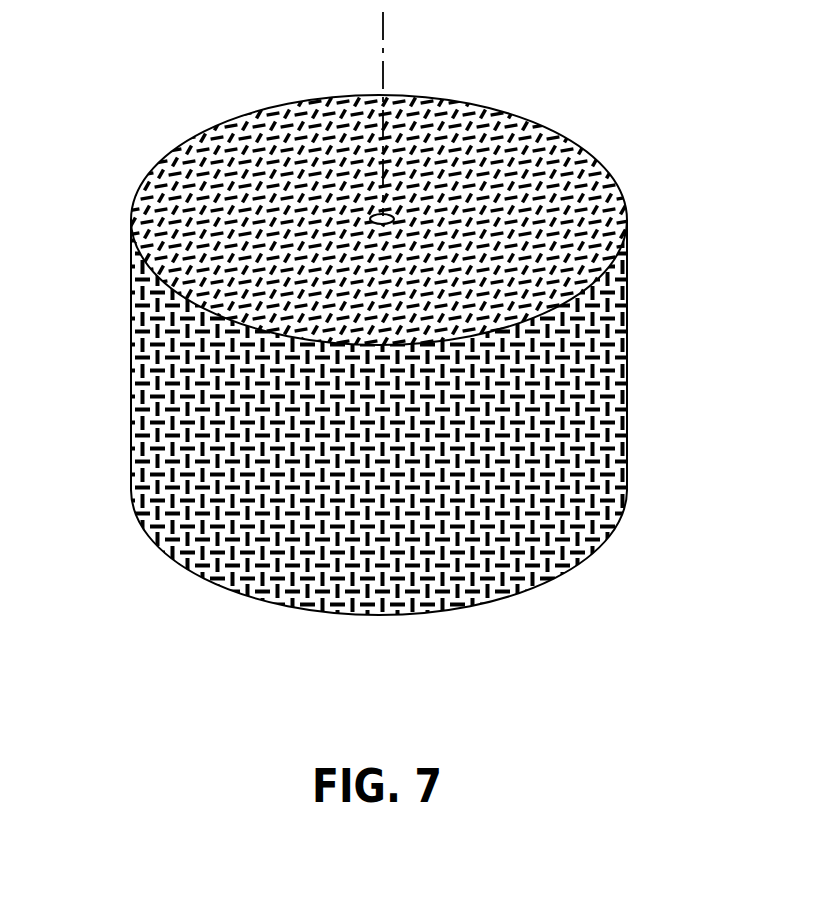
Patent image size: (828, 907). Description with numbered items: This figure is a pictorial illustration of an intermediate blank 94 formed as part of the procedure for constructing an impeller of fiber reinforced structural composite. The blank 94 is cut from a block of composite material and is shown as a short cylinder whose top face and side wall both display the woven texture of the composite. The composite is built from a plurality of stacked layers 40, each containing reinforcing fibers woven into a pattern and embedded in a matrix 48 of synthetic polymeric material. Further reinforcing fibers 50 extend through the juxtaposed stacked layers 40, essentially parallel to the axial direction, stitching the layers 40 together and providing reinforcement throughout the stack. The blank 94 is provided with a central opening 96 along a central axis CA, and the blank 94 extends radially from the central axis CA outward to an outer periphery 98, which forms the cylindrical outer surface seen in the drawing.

The layers 40 is at (365, 327).
The matrix 48 is at (222, 538).
The reinforcing fibers 50 is at (167, 470).
The blank 94 is at (627, 359).
The central opening 96 is at (390, 216).
The outer periphery 98 is at (130, 419).
The central axis CA is at (384, 33).